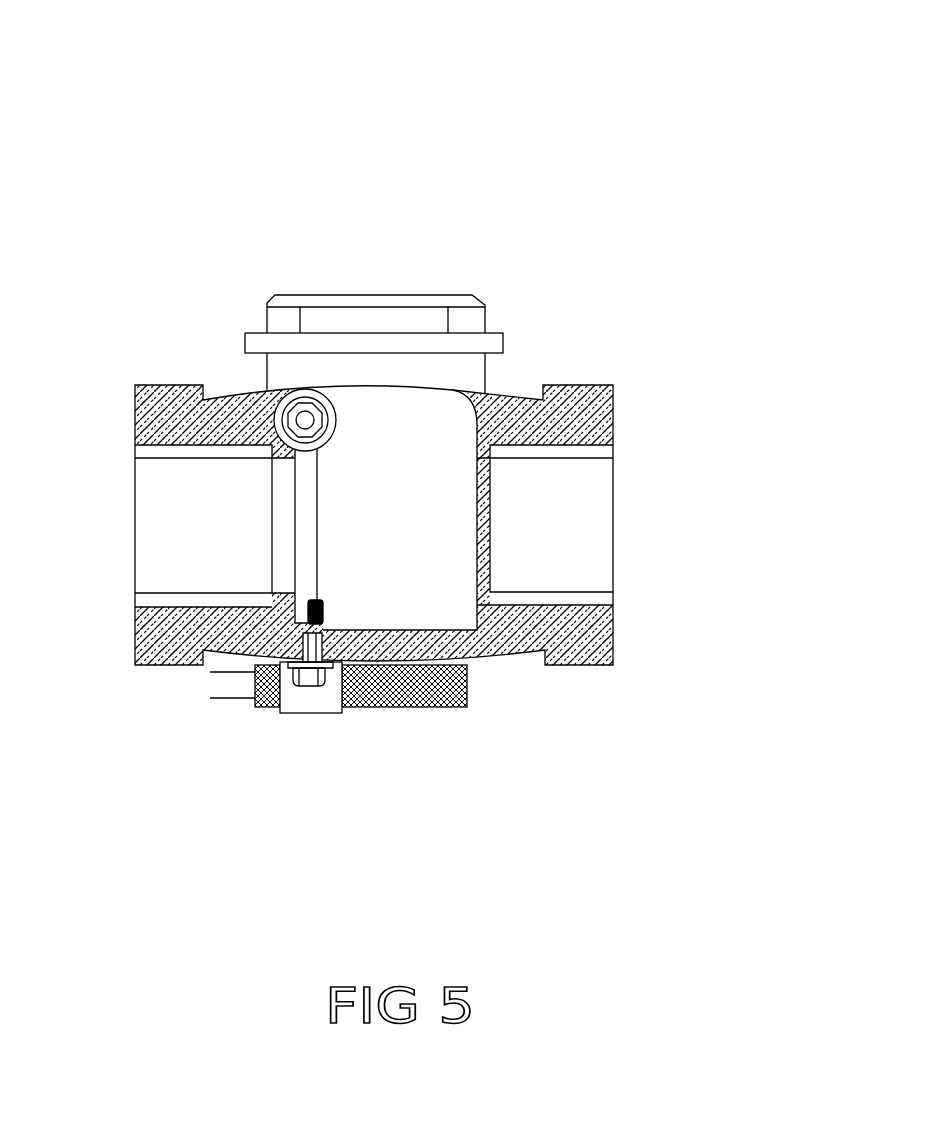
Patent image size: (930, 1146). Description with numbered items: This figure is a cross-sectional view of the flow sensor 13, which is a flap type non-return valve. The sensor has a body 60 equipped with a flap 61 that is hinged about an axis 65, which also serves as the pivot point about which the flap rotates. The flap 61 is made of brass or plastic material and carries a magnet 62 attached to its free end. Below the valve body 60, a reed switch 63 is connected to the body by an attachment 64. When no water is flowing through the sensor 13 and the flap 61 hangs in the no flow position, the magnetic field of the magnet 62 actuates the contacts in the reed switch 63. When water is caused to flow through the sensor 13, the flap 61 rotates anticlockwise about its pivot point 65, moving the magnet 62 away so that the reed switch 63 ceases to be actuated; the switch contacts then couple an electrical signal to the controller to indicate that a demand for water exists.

The flow sensor 13 is at (293, 210).
The body 60 is at (572, 384).
The flap 61 is at (319, 510).
The magnet 62 is at (310, 604).
The reed switch 63 is at (418, 708).
The attachment 64 is at (307, 703).
The axis 65 is at (300, 415).